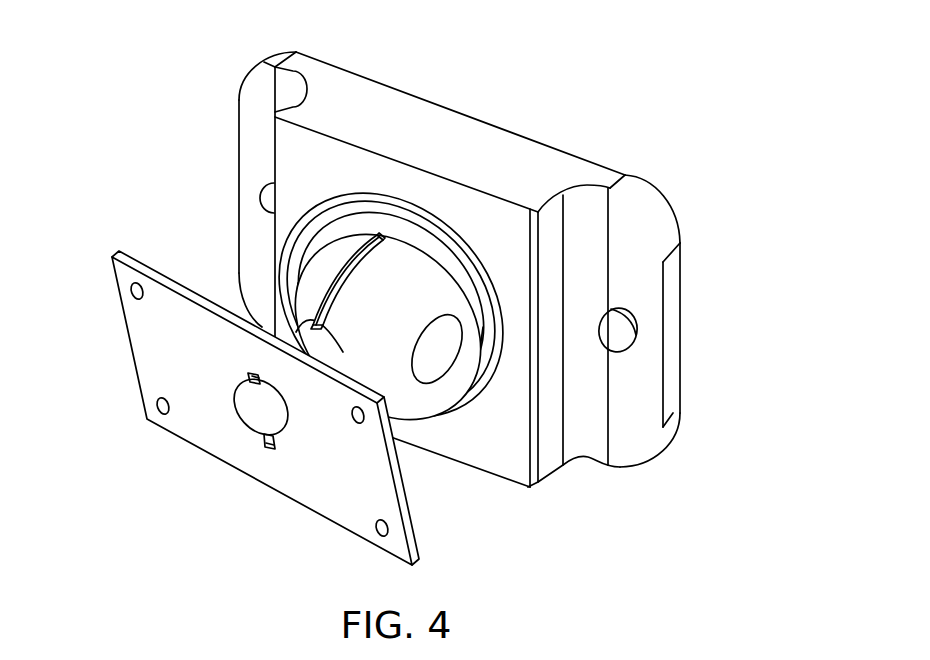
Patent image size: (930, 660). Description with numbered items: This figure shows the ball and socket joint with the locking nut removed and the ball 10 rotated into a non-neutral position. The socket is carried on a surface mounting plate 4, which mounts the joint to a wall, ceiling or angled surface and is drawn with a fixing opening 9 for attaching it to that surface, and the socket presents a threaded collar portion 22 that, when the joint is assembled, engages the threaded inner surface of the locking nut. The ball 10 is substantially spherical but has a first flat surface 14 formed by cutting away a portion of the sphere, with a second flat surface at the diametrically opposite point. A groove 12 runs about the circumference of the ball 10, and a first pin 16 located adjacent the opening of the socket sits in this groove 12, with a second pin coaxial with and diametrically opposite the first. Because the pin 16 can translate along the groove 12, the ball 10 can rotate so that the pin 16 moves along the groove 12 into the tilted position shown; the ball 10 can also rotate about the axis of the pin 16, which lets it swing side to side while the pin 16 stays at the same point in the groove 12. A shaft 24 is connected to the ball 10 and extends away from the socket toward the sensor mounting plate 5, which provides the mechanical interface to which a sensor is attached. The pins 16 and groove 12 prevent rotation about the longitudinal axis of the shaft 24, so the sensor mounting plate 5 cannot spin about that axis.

The surface mounting plate 4 is at (642, 398).
The sensor mounting plate 5 is at (267, 467).
The mounting hole 9 is at (617, 333).
The ball 10 is at (345, 245).
The groove 12 is at (337, 275).
The first flat surface 14 is at (432, 365).
The first pin 16 is at (383, 240).
The threaded collar portion 22 is at (447, 242).
The shaft 24 is at (273, 305).